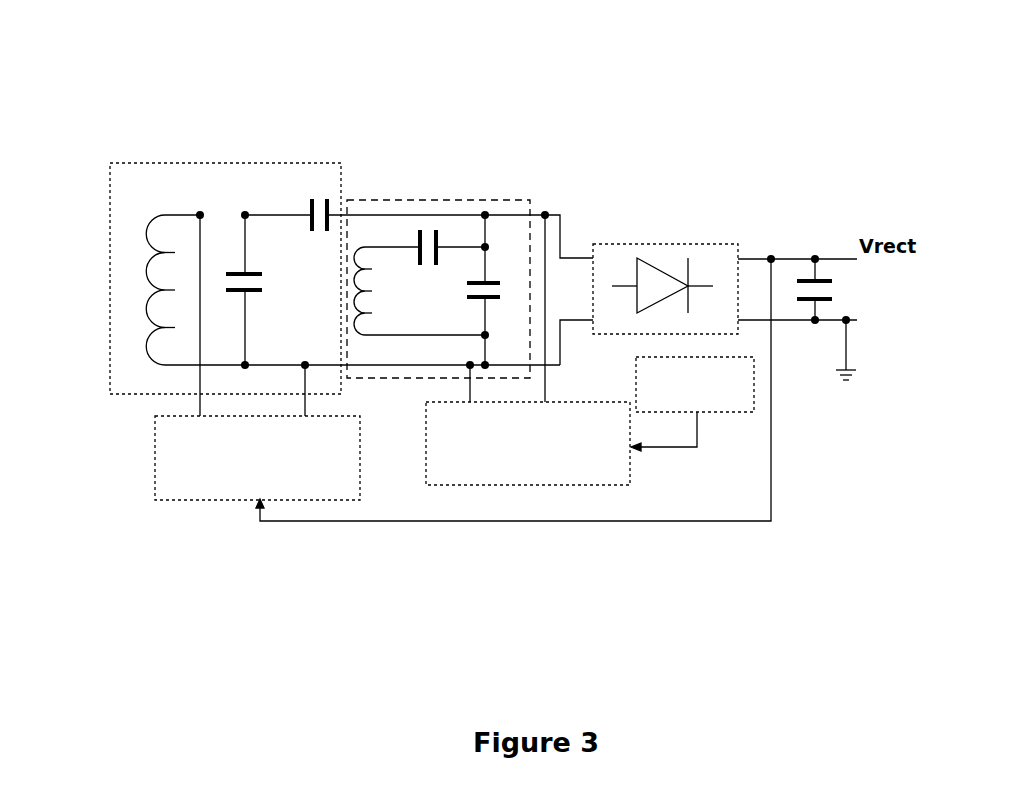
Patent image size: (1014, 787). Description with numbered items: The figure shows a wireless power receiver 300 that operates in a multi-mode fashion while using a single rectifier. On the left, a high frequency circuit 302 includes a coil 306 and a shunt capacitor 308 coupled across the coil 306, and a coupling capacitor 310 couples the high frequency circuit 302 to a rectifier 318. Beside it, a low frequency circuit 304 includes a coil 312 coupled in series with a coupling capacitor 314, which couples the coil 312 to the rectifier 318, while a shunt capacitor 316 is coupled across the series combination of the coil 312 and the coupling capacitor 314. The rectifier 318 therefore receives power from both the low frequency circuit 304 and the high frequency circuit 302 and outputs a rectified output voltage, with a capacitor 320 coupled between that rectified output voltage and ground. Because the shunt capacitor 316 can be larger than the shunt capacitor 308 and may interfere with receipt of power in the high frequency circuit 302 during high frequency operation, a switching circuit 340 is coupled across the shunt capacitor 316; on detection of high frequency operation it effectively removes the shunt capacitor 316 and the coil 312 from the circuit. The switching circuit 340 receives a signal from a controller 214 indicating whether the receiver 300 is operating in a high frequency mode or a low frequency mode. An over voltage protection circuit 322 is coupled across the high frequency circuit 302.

The receiver 300 is at (90, 98).
The high frequency circuit 302 is at (225, 278).
The low frequency circuit 304 is at (457, 207).
The coil 306 is at (150, 291).
The shunt capacitor 308 is at (262, 286).
The coupling capacitor 310 is at (308, 200).
The coil 312 is at (360, 277).
The coupling capacitor 314 is at (420, 258).
The shunt capacitor 316 is at (493, 292).
The rectifier 318 is at (635, 252).
The capacitor 320 is at (832, 283).
The over voltage protection (OVP) circuit 322 is at (257, 458).
The switching circuit 340 is at (528, 443).
The controller 214 is at (705, 402).